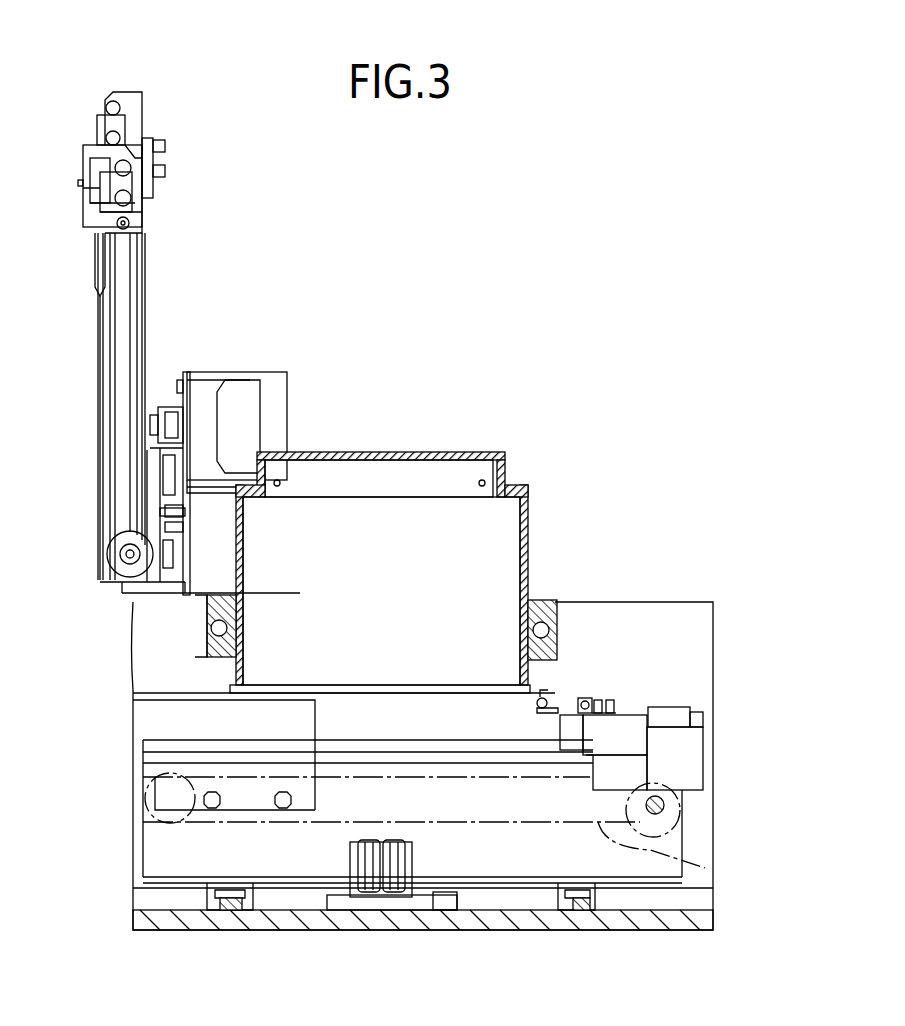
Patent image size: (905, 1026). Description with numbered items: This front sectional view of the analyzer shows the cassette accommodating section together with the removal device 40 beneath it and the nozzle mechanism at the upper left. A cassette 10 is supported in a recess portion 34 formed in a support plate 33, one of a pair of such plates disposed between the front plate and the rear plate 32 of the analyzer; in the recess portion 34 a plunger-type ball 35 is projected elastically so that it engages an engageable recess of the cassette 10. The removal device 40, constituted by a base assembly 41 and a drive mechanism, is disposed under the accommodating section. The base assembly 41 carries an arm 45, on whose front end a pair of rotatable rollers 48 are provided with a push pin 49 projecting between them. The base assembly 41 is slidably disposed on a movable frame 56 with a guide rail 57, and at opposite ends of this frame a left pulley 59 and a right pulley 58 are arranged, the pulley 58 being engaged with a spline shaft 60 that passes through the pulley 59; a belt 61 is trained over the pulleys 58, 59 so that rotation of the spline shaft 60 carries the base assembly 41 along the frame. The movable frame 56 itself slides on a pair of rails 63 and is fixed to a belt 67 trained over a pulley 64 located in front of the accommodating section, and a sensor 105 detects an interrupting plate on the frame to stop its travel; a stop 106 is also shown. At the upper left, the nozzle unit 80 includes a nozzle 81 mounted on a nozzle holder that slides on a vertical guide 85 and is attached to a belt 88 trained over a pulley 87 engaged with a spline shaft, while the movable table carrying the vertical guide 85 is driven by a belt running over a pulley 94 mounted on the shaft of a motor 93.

The pipetting head assembly 80 is at (75, 57).
The vertical guide 85 is at (125, 337).
The nozzle 81 is at (100, 372).
The belt 88 is at (146, 360).
The pulley 94 is at (178, 408).
The motor 93 is at (275, 385).
The cassette 10 is at (505, 450).
The recess portion 34 is at (528, 530).
The support plate 33 is at (555, 603).
The ball 35 is at (213, 628).
The sensor 105 is at (168, 517).
The pulley 87 is at (128, 565).
The rear plate 32 is at (648, 602).
The removal device 40 is at (812, 643).
The base assembly 41 is at (643, 703).
The push pin 49 is at (546, 698).
The roller 48 is at (582, 700).
The arm 45 is at (612, 705).
The movable frame 56 is at (470, 750).
The guide rail 57 is at (372, 762).
The pulley 59 is at (157, 790).
The pulley 58 is at (668, 803).
The spline shaft 60 is at (664, 812).
The belt 61 is at (670, 854).
The rail 63 is at (230, 905).
The pulley 64 is at (369, 875).
The belt 67 is at (390, 873).
The stop 106 is at (452, 905).